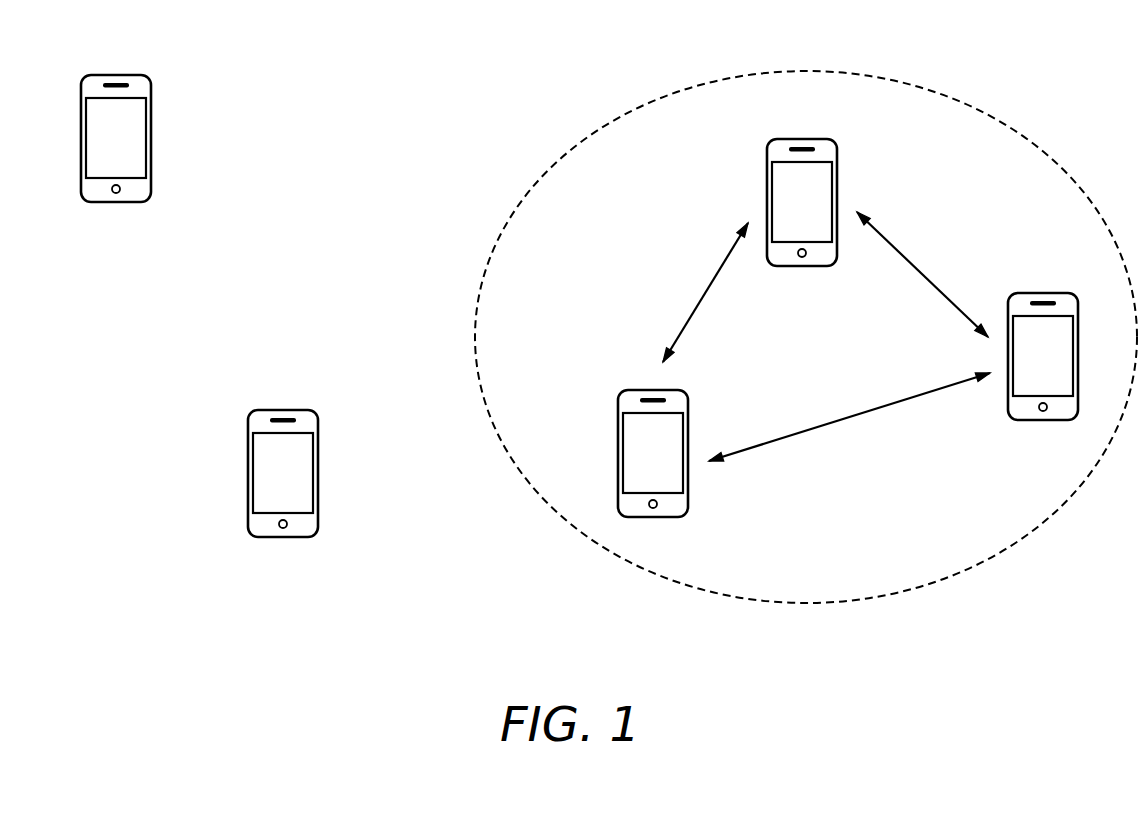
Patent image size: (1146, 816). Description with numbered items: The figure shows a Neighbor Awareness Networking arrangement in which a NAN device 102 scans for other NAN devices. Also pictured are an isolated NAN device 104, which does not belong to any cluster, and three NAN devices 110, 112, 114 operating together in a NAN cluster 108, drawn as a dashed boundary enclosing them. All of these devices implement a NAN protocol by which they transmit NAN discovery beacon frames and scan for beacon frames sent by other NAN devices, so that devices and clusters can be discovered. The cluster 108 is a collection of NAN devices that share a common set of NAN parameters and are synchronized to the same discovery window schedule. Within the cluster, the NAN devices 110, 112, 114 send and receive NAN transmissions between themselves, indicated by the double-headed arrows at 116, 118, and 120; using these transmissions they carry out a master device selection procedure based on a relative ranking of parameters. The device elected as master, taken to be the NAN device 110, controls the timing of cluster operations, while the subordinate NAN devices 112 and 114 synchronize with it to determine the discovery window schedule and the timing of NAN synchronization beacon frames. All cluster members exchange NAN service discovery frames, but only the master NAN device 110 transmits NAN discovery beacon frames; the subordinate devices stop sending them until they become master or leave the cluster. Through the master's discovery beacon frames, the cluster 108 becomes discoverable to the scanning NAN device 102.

The NAN device 102 is at (115, 203).
The isolated NAN device 104 is at (283, 538).
The NAN cluster 108 is at (950, 96).
The master NAN device 110 is at (805, 139).
The subordinate NAN device 112 is at (658, 390).
The subordinate NAN device 114 is at (1048, 293).
The NAN transmissions 116 is at (706, 290).
The NAN transmissions 118 is at (921, 270).
The NAN transmissions 120 is at (849, 418).